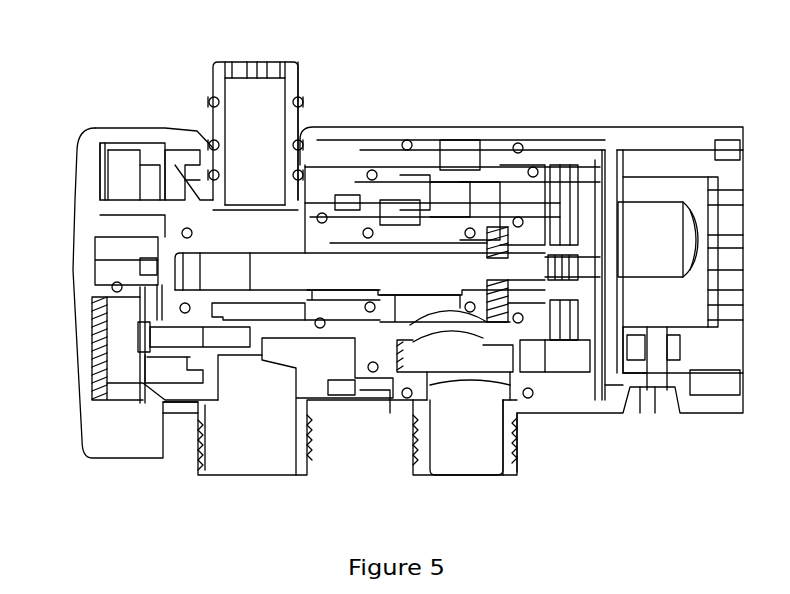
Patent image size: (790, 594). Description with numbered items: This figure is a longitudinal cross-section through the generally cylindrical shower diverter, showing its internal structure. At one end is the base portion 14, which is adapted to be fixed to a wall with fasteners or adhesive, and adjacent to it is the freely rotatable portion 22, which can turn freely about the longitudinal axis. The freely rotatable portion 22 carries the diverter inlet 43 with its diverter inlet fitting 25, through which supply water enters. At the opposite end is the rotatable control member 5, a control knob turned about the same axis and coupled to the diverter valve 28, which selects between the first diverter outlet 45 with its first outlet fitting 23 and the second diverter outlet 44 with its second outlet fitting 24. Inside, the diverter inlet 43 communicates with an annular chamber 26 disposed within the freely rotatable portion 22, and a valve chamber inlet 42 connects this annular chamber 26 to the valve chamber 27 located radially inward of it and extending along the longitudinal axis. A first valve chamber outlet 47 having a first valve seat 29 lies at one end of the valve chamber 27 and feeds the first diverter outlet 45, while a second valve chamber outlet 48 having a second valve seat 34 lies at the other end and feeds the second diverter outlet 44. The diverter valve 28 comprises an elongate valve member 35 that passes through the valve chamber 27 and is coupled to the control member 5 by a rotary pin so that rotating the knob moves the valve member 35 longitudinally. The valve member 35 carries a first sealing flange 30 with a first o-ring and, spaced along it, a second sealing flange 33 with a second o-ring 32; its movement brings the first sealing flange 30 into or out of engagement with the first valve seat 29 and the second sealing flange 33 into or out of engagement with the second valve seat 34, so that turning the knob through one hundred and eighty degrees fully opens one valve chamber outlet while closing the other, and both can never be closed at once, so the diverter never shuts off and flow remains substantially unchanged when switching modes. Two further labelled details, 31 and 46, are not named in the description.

The rotatable control member 5 is at (75, 225).
The base portion 14 is at (690, 137).
The freely rotatable portion 22 is at (455, 135).
The first outlet fitting 23 is at (268, 72).
The second outlet fitting 24 is at (195, 443).
The diverter inlet fitting 25 is at (517, 445).
The annular chamber 26 is at (505, 350).
The valve chamber 27 is at (447, 205).
The diverter valve 28 is at (200, 200).
The first valve seat 29 is at (345, 200).
The first sealing flange 30 is at (410, 210).
The spool 31 is at (393, 205).
The second o-ring 32 is at (475, 200).
The second sealing flange 33 is at (515, 200).
The second valve seat 34 is at (580, 220).
The valve member 35 is at (375, 268).
The valve chamber inlet 42 is at (430, 322).
The diverter inlet 43 is at (462, 385).
The second diverter outlet 44 is at (240, 387).
The first diverter outlet 45 is at (258, 210).
The end cap 46 is at (100, 198).
The first valve chamber outlet 47 is at (328, 205).
The second valve chamber outlet 48 is at (612, 215).